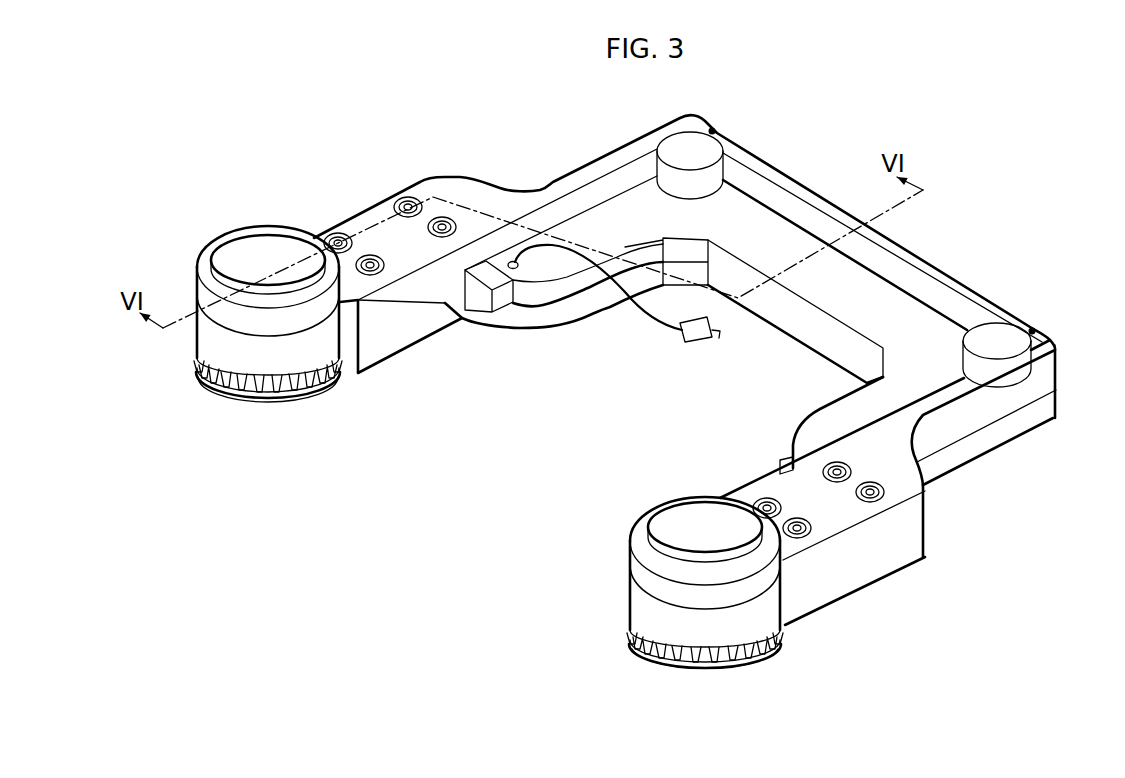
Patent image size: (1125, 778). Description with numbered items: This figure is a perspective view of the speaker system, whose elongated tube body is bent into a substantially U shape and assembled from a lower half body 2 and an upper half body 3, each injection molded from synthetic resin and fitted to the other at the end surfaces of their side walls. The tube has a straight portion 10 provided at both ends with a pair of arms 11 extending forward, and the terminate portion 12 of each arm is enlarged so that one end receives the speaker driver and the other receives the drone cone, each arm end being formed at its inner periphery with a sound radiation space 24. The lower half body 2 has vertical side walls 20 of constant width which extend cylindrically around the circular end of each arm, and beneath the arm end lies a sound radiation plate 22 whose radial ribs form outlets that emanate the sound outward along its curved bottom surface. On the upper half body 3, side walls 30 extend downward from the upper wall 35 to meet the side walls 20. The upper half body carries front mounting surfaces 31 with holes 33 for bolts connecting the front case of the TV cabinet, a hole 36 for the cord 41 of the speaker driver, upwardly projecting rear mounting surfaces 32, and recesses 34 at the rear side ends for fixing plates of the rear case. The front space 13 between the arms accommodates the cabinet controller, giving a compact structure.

The lower half body 2 is at (972, 447).
The upper half body 3 is at (1030, 382).
The straight portion 10 is at (812, 190).
The arm 11 is at (534, 184).
The terminate portion of the arm 12 is at (193, 322).
The front space 13 is at (548, 414).
The side wall 20 is at (900, 556).
The sound radiation plate 22 is at (680, 670).
The sound radiation space 24 is at (712, 660).
The side wall 30 is at (910, 513).
The mounting surface 31 is at (276, 252).
The mounting surface 32 is at (690, 153).
The hole 33 is at (408, 204).
The recess 34 is at (716, 133).
The upper wall 35 is at (603, 228).
The hole 36 is at (515, 272).
The cord 41 is at (645, 313).